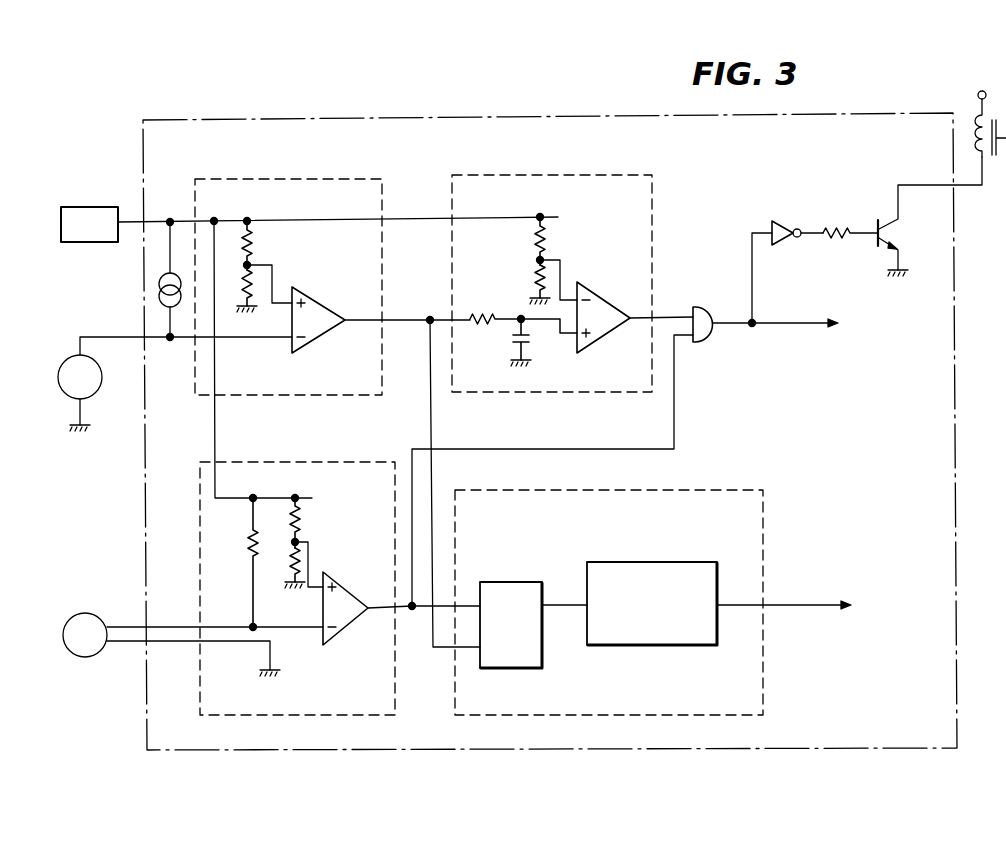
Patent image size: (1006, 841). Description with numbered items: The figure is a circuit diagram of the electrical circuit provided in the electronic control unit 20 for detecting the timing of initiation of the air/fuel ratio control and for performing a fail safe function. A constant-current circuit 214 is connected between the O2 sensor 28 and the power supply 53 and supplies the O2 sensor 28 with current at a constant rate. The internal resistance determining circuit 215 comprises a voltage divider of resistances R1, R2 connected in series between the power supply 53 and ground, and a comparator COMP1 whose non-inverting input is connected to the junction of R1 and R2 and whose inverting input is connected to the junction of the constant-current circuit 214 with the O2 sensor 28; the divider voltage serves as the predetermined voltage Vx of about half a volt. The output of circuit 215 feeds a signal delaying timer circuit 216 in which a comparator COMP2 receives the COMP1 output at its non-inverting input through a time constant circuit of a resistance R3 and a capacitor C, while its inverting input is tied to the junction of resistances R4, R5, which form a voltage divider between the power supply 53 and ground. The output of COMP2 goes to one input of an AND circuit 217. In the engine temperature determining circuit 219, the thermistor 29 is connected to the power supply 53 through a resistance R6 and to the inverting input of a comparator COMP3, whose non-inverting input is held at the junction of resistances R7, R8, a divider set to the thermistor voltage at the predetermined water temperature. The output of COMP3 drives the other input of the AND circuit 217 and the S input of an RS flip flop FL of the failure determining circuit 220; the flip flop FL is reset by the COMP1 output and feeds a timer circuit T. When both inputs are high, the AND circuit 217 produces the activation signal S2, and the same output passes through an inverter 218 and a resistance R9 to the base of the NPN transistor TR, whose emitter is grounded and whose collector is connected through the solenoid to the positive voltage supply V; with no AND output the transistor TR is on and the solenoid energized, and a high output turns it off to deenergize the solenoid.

The electronic control unit 20 is at (143, 501).
The power supply 53 is at (85, 207).
The constant-current circuit 214 is at (158, 297).
The O2 sensor 28 is at (103, 384).
The thermistor 29 is at (86, 658).
The internal resistance determining circuit 215 is at (298, 178).
The signal delaying timer circuit 216 is at (585, 175).
The AND circuit 217 is at (697, 306).
The inverter 218 is at (772, 220).
The engine temperature determining circuit 219 is at (324, 461).
The failure determining circuit 220 is at (690, 488).
The resistance R1 is at (254, 246).
The resistance R2 is at (246, 297).
The resistance R3 is at (486, 313).
The resistance R4 is at (548, 240).
The resistance R5 is at (534, 282).
The resistance R6 is at (248, 549).
The resistance R7 is at (305, 517).
The resistance R8 is at (290, 566).
The resistance R9 is at (835, 220).
The capacitor C is at (535, 338).
The comparator COMP1 is at (320, 303).
The comparator COMP2 is at (610, 282).
The comparator COMP3 is at (340, 585).
The RS flip flop FL is at (508, 582).
The timer circuit T is at (655, 562).
The NPN transistor TR is at (891, 232).
The activation signal S2 is at (785, 326).
The positive voltage power supply V is at (985, 114).